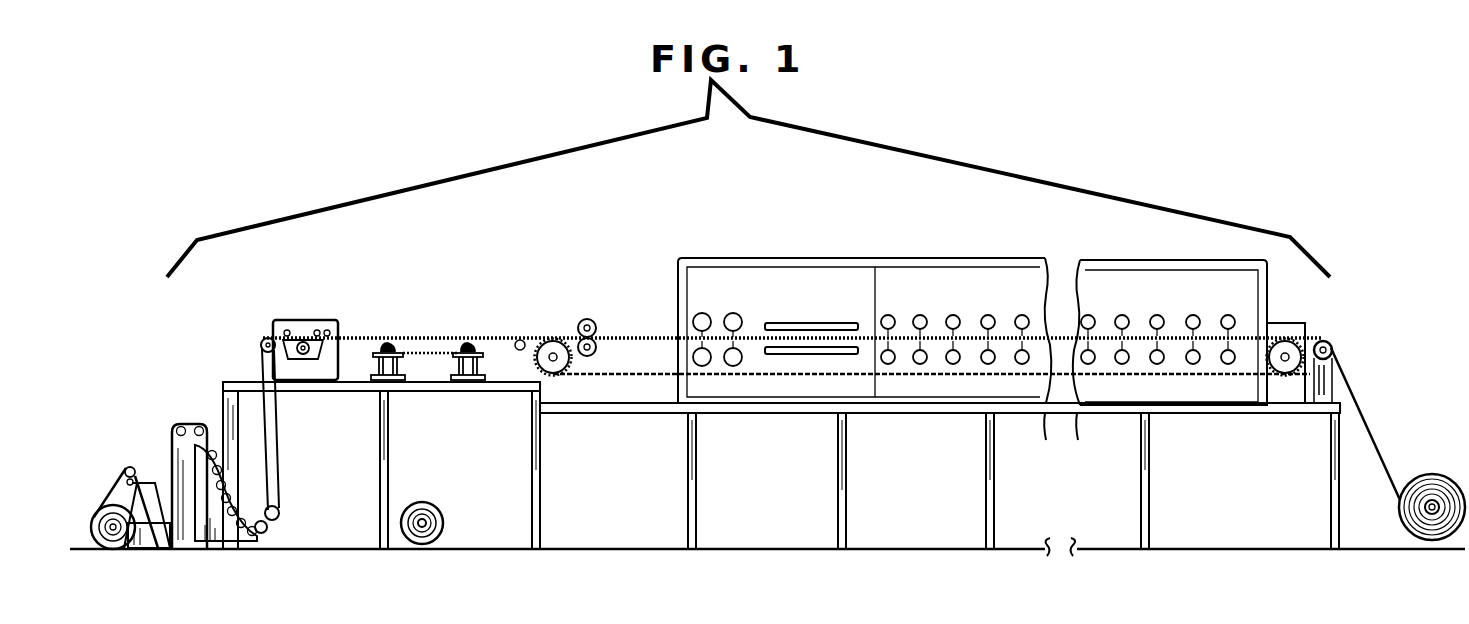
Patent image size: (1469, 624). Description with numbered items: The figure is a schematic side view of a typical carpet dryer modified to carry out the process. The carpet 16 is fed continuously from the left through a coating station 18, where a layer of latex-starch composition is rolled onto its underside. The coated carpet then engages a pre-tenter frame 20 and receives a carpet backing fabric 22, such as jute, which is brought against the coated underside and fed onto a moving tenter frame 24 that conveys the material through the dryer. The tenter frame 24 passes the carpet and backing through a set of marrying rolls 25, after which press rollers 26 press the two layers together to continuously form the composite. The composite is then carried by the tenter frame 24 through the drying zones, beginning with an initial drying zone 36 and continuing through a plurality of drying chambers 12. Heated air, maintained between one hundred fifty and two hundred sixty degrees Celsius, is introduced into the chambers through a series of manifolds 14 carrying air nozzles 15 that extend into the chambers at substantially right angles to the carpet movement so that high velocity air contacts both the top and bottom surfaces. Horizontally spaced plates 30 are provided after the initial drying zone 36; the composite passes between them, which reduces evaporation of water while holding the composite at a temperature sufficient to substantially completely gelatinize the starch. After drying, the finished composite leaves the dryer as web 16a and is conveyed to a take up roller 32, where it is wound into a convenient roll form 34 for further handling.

The drying chambers 12 is at (915, 303).
The manifolds 14 is at (988, 314).
The air nozzles 15 is at (730, 331).
The carpet 16 is at (282, 464).
The treated web 16a is at (1368, 406).
The coating station 18 is at (324, 312).
The pre-tenter frame 20 is at (428, 358).
The carpet backing fabric 22 is at (475, 424).
The tenter frame 24 is at (803, 377).
The marrying rolls 25 is at (403, 517).
The press rollers 26 is at (590, 306).
The horizontally spaced plates 30 is at (814, 316).
The take up roller 32 is at (1432, 510).
The roll form 34 is at (1422, 472).
The initial drying zone 36 is at (757, 278).